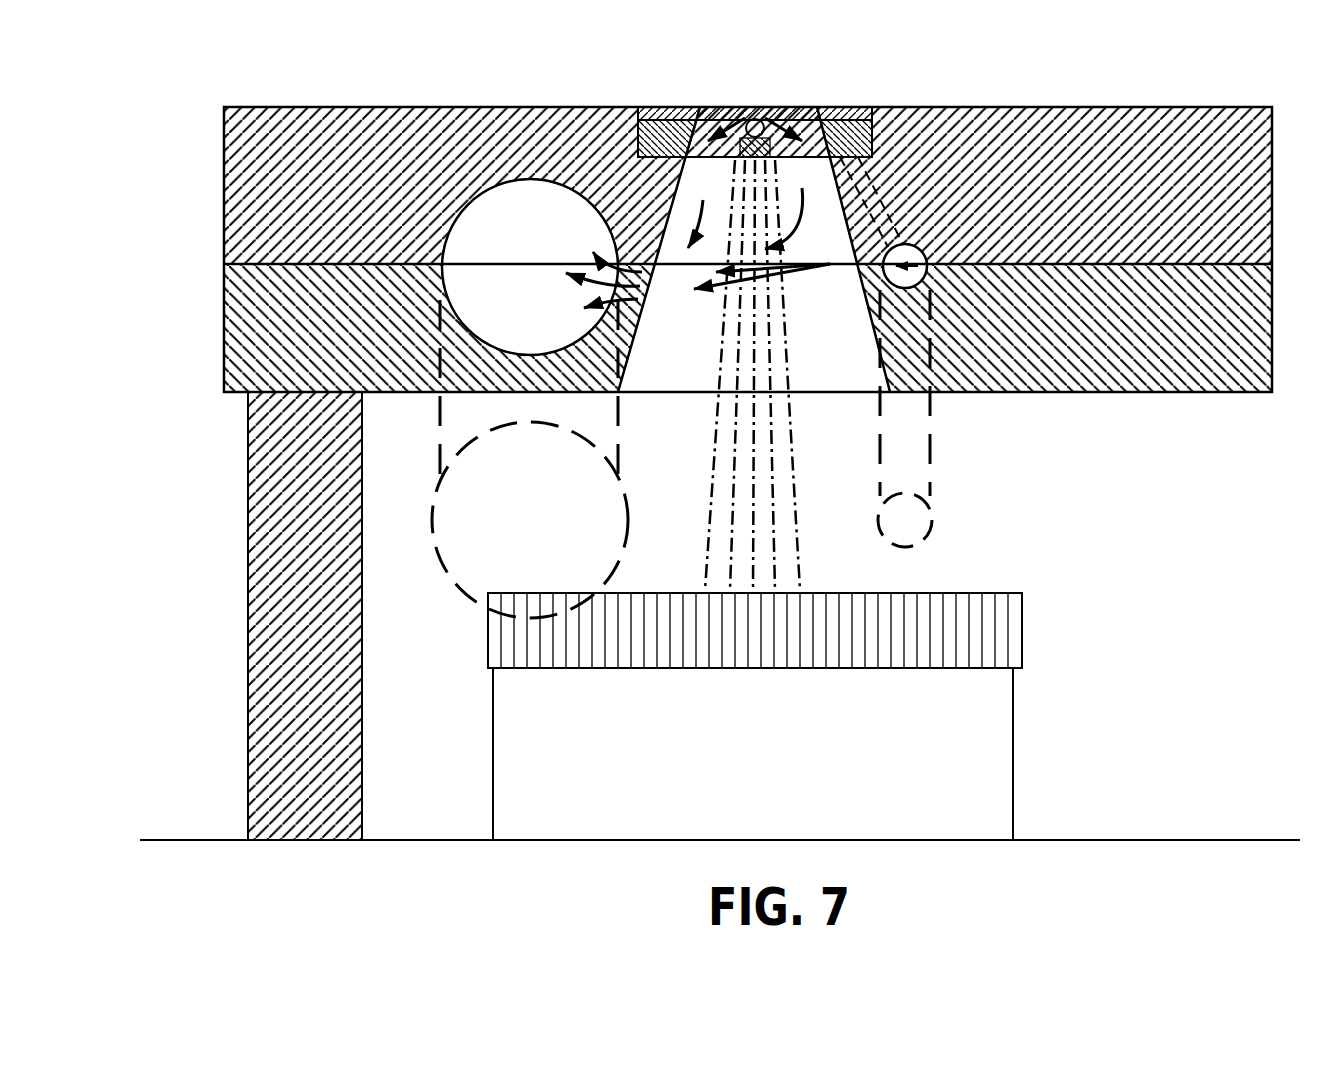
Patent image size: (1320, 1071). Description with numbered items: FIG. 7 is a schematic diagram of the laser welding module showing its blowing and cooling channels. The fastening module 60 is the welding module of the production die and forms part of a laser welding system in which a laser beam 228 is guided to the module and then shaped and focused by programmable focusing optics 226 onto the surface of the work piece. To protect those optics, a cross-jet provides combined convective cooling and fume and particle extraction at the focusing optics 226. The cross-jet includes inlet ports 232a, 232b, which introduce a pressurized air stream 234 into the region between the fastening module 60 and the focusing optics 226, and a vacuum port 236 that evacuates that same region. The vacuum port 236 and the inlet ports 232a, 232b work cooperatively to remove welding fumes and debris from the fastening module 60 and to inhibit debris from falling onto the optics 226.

The fastening module 60 is at (200, 107).
The vacuum port 236 is at (523, 205).
The pressurized air stream 234 is at (692, 223).
The inlet port 232b is at (755, 119).
The inlet port 232a is at (905, 244).
The laser beam 228 is at (800, 542).
The programmable focusing optics 226 is at (930, 780).